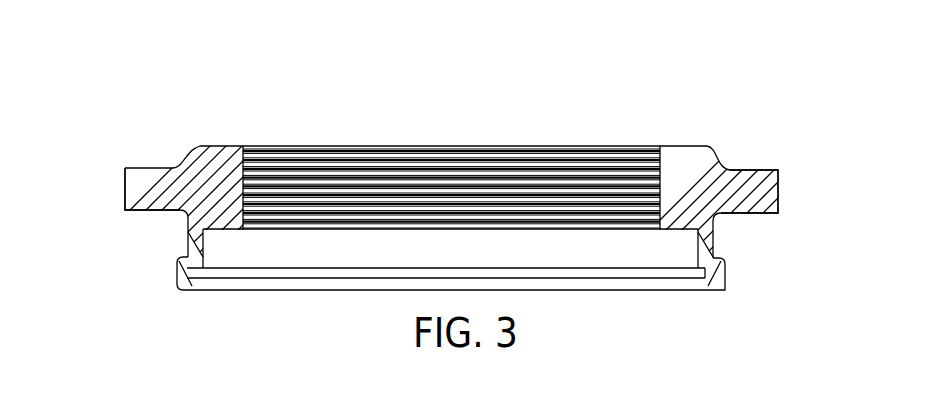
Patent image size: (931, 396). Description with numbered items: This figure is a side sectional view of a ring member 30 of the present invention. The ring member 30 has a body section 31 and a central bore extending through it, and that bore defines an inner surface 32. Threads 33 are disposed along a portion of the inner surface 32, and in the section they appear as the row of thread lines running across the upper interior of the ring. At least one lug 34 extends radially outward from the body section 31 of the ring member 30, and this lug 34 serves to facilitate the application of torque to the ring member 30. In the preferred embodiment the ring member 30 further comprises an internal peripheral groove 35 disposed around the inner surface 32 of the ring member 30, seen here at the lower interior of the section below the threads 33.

The ring member 30 is at (237, 147).
The body section 31 is at (188, 250).
The inner surface 32 is at (698, 248).
The threads 33 is at (558, 170).
The lug 34 is at (753, 197).
The internal peripheral groove 35 is at (199, 280).